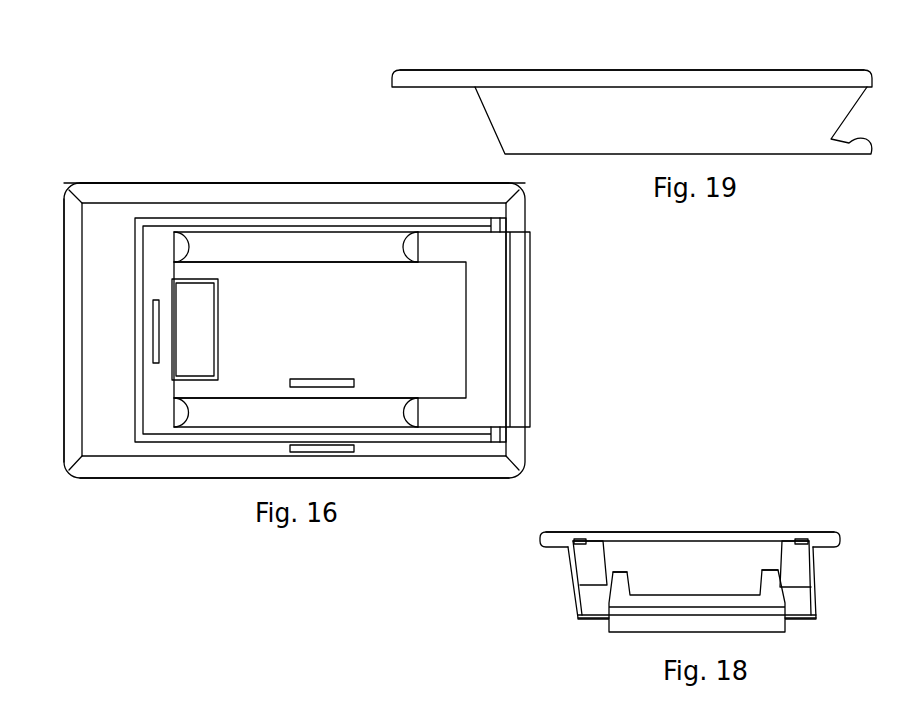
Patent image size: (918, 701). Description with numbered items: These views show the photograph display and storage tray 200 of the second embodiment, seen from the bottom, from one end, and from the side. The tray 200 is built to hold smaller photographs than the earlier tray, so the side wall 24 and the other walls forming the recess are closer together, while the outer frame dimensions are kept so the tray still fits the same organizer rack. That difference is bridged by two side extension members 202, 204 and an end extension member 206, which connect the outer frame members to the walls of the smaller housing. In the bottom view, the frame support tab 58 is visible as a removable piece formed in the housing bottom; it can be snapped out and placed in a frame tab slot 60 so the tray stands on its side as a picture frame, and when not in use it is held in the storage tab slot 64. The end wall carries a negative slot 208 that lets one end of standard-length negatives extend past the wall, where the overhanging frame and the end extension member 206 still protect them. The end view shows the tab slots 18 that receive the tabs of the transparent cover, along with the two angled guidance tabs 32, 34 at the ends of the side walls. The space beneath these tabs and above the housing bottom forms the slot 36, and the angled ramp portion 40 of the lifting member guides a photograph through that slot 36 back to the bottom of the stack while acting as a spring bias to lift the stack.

In FIG. 18, the tab slot 18 is at (812, 537).
In FIG. 19, the side wall 24 is at (617, 118).
In FIG. 18, the guidance tab 32 is at (798, 572).
In FIG. 18, the guidance tab 34 is at (595, 562).
In FIG. 18, the slot 36 is at (799, 607).
In FIG. 18, the angled ramp portion 40 is at (774, 570).
In FIG. 16, the frame support tab 58 is at (193, 330).
In FIG. 16, the frame tab slot 60 is at (347, 449).
In FIG. 16, the storage tab slot 64 is at (347, 384).
In FIG. 16, the photograph display and storage tray 200 is at (298, 168).
In FIG. 19, the photograph display and storage tray 200 is at (718, 56).
In FIG. 18, the photograph display and storage tray 200 is at (682, 515).
In FIG. 16, the side extension member 202 is at (453, 470).
In FIG. 16, the side extension member 204 is at (368, 208).
In FIG. 16, the end extension member 206 is at (113, 350).
In FIG. 16, the negative slot 208 is at (157, 300).